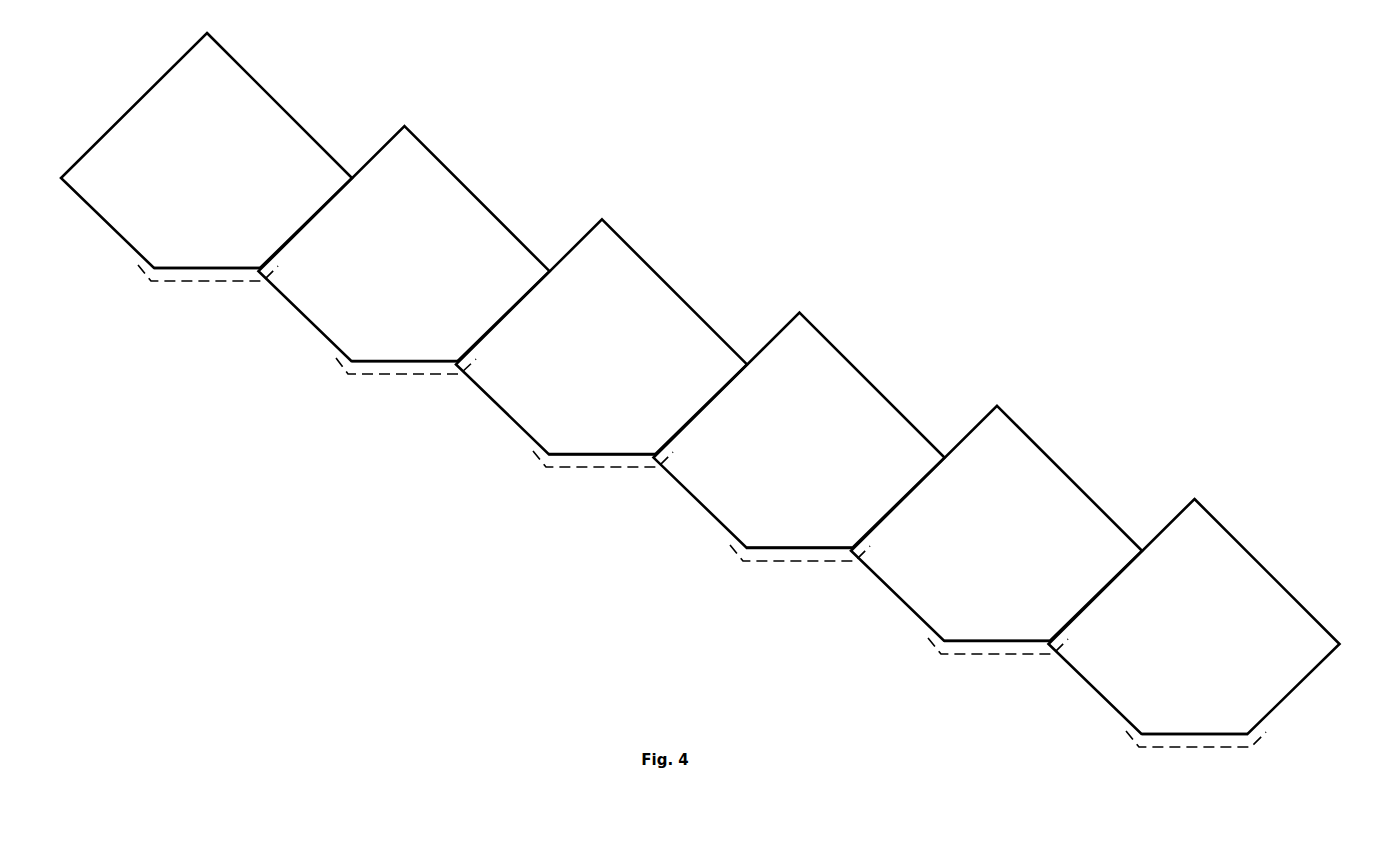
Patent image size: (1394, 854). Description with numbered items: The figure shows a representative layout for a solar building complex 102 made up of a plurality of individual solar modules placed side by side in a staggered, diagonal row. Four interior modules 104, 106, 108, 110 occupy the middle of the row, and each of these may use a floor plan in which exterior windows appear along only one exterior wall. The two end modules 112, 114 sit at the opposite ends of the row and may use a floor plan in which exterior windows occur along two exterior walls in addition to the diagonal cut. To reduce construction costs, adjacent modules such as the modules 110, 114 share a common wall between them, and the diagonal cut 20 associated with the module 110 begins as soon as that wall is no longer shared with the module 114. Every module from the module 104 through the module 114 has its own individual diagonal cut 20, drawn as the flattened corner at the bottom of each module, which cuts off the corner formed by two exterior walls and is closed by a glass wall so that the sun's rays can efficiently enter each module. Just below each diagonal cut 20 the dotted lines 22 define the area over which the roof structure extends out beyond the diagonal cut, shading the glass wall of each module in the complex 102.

The solar building complex 102 is at (790, 246).
The interior module 104 is at (390, 278).
The interior module 106 is at (588, 371).
The interior module 108 is at (786, 465).
The interior module 110 is at (983, 558).
The end module 112 is at (193, 185).
The end module 114 is at (1180, 651).
The diagonal cut 20 is at (187, 269).
The dotted lines 22 is at (215, 282).